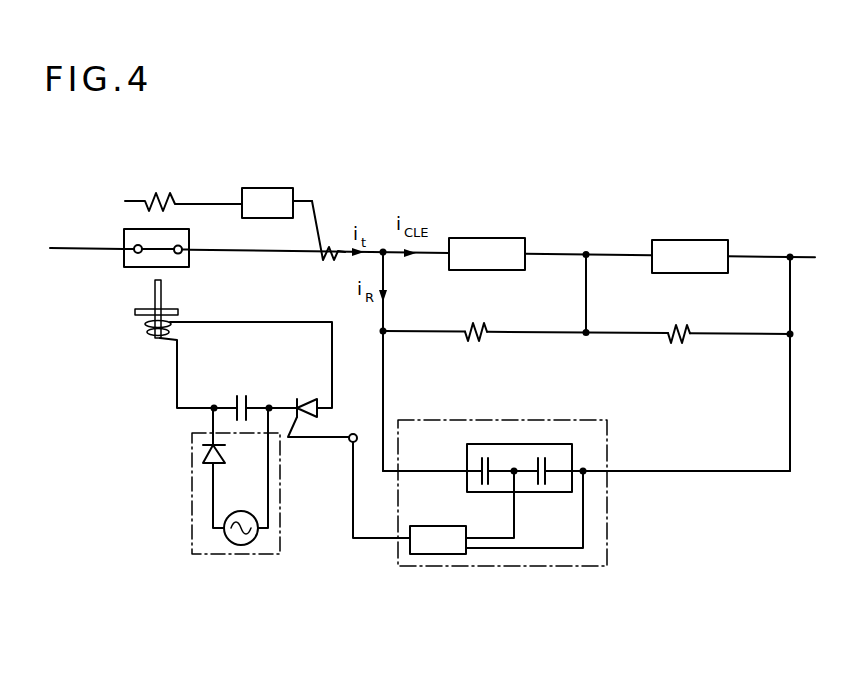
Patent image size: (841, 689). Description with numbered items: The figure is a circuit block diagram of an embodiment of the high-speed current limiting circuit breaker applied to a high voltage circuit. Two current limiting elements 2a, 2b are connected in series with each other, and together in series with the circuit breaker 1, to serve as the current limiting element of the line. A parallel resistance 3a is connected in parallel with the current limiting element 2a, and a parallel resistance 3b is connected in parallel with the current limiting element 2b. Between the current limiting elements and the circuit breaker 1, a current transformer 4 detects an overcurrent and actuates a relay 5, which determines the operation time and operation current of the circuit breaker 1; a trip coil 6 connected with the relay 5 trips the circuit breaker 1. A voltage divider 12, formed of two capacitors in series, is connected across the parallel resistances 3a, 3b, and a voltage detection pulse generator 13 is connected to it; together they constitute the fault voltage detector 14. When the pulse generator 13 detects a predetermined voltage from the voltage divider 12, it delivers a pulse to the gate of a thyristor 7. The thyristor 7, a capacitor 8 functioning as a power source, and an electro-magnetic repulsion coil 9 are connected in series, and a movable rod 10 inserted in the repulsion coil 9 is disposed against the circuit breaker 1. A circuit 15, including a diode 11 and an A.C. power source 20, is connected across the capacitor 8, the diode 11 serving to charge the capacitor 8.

The circuit breaker 1 is at (124, 256).
The current limiting element 2a is at (487, 238).
The current limiting element 2b is at (691, 240).
The parallel resistance 3a is at (481, 338).
The parallel resistance 3b is at (688, 340).
The current transformer 4 is at (331, 243).
The relay 5 is at (273, 188).
The trip coil 6 is at (160, 195).
The thyristor 7 is at (305, 397).
The capacitor 8 is at (237, 394).
The electro-magnetic repulsion coil 9 is at (148, 338).
The movable rod 10 is at (163, 288).
The diode 11 is at (203, 463).
The voltage divider 12 is at (555, 457).
The voltage detection pulse generator 13 is at (455, 548).
The fault voltage detector 14 is at (608, 503).
The circuit 15 is at (191, 437).
The A.C. power source 20 is at (250, 545).